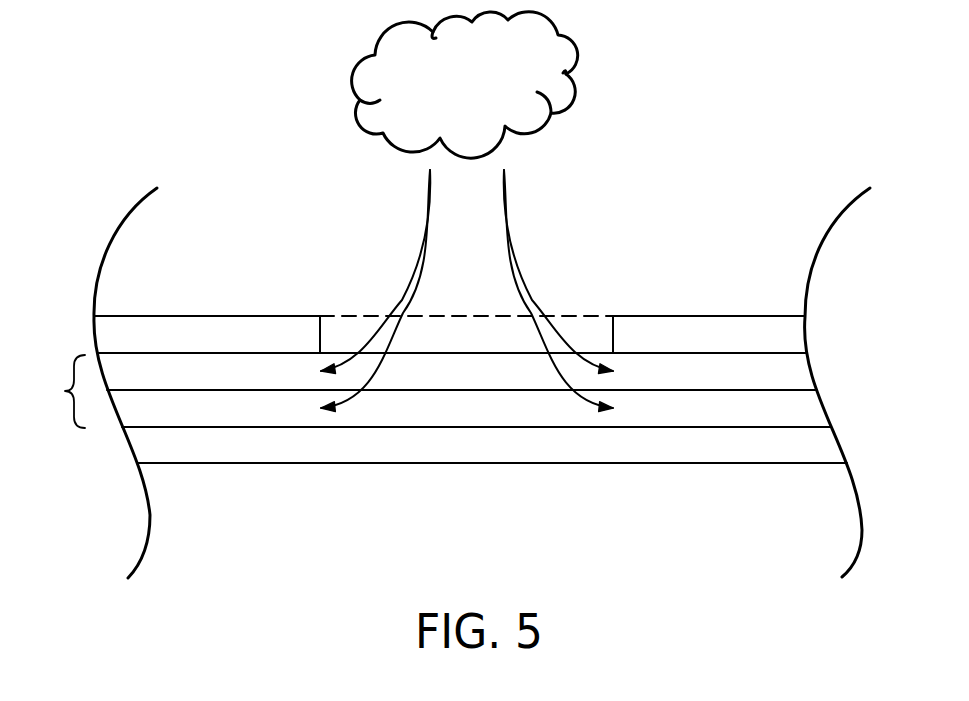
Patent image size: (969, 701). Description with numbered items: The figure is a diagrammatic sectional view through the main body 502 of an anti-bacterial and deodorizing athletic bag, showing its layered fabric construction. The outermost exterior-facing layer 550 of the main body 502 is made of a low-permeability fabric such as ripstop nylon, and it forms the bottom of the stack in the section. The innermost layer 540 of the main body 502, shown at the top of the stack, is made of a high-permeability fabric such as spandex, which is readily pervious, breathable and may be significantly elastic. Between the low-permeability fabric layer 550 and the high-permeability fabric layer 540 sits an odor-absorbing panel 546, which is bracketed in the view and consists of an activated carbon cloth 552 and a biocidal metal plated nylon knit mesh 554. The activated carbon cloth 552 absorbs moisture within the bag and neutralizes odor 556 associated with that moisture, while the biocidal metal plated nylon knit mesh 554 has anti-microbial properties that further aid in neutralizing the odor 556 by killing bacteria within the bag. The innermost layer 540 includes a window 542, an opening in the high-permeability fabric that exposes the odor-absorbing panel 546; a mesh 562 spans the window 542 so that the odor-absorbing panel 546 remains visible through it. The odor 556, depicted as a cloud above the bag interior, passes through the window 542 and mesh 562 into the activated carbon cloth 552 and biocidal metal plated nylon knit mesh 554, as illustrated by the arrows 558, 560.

The main body 502 is at (867, 317).
The innermost layer 540 is at (192, 346).
The window 542 is at (360, 279).
The odor-absorbing panel 546 is at (18, 404).
The outermost exterior-facing layer 550 is at (447, 456).
The activated carbon cloth 552 is at (447, 419).
The biocidal metal plated nylon knit mesh 554 is at (447, 382).
The odor 556 is at (447, 114).
The arrow 558 is at (428, 208).
The arrow 560 is at (507, 208).
The mesh 562 is at (447, 346).